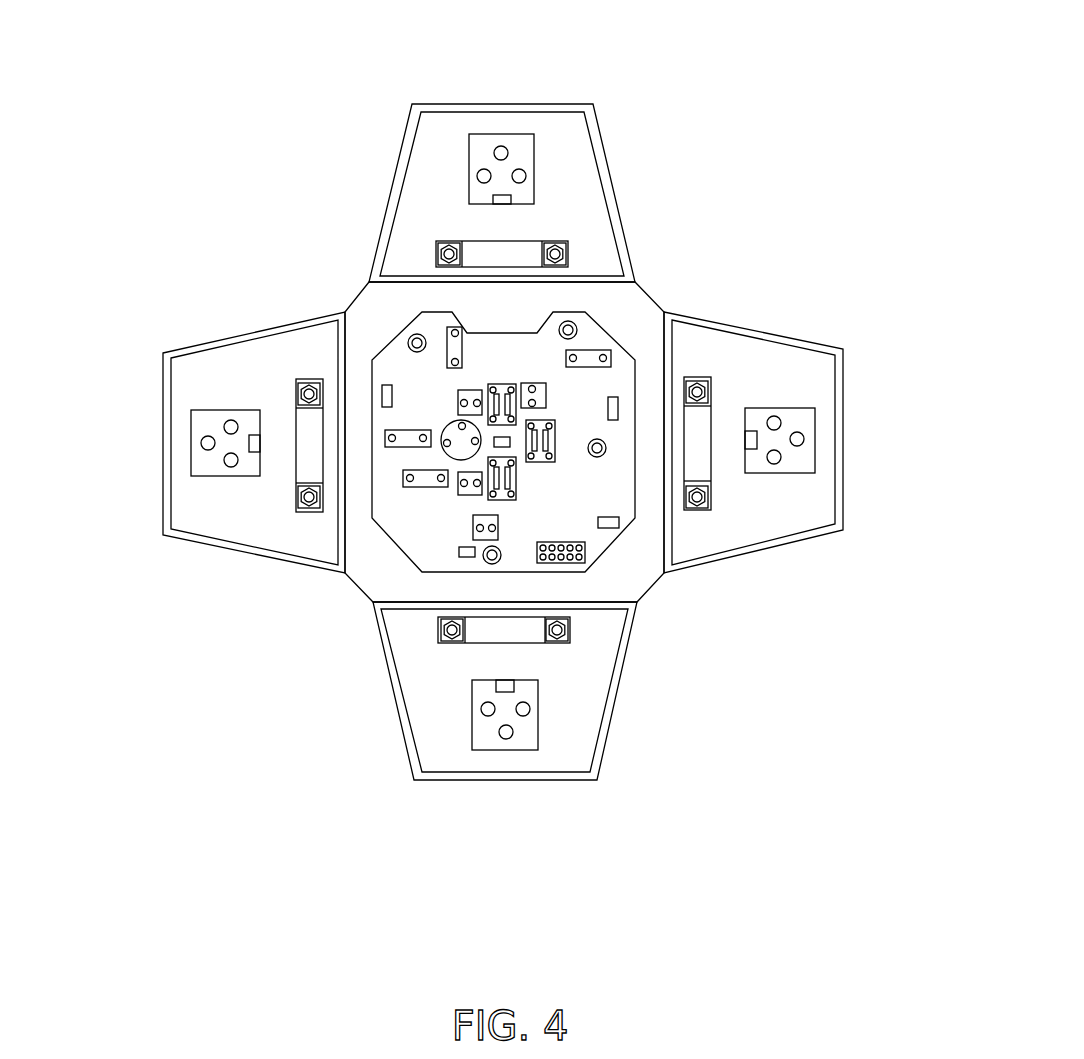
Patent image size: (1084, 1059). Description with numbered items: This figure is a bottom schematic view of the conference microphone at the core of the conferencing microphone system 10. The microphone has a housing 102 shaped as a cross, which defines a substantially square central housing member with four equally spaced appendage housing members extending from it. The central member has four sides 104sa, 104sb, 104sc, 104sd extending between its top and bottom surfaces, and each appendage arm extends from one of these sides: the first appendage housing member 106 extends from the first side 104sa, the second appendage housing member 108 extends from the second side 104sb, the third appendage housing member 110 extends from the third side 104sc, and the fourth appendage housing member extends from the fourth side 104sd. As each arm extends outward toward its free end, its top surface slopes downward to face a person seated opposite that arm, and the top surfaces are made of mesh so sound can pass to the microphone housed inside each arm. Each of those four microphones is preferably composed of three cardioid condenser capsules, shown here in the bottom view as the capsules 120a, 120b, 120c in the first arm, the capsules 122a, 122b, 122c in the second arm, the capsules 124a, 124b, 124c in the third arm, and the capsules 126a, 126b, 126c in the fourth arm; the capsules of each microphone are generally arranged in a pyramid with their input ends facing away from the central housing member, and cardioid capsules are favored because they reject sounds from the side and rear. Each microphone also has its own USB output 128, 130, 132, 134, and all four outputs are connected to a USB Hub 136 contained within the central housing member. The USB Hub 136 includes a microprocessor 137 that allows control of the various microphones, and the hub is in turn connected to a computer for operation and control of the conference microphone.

The conferencing microphone system 10 is at (369, 302).
The housing 102 is at (578, 780).
The first appendage housing member 106 is at (163, 518).
The second appendage housing member 108 is at (586, 100).
The third appendage housing member 110 is at (843, 497).
The first side of central housing member 104sa is at (332, 350).
The second side of central housing member 104sb is at (594, 274).
The third side of central housing member 104sc is at (672, 533).
The fourth side of central housing member 104sd is at (413, 608).
The cardioid condenser capsule 120a is at (200, 443).
The cardioid condenser capsule 120b is at (231, 420).
The cardioid condenser capsule 120c is at (231, 467).
The cardioid condenser capsule 122a is at (500, 146).
The cardioid condenser capsule 122b is at (527, 176).
The cardioid condenser capsule 122c is at (477, 176).
The cardioid condenser capsule 124a is at (804, 439).
The cardioid condenser capsule 124b is at (774, 464).
The cardioid condenser capsule 124c is at (774, 416).
The cardioid condenser capsule 126a is at (506, 740).
The cardioid condenser capsule 126b is at (481, 709).
The cardioid condenser capsule 126c is at (530, 709).
The USB output 128 is at (256, 447).
The USB output 130 is at (497, 203).
The USB output 132 is at (750, 441).
The USB output 134 is at (505, 680).
The USB Hub 136 is at (575, 385).
The microprocessor 137 is at (587, 553).